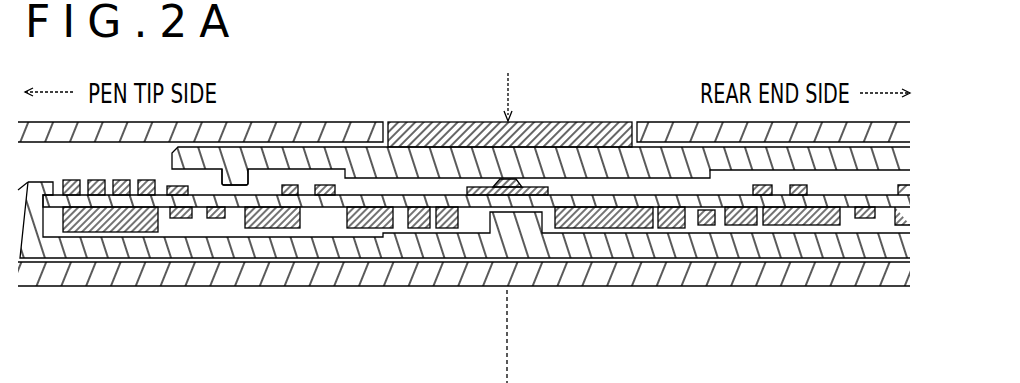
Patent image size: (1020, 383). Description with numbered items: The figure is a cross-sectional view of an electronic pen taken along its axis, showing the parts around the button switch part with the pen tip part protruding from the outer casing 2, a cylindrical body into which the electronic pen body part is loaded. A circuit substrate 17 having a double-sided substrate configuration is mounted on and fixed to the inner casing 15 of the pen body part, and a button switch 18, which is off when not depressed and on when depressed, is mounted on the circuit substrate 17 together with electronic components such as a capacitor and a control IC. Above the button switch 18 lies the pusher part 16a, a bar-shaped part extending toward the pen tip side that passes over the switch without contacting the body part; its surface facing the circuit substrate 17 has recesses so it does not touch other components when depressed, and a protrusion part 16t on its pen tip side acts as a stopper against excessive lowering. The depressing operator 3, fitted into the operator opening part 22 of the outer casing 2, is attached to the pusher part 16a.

The outer casing 2 is at (257, 122).
The depressing operator 3 is at (562, 122).
The operator opening part 22 is at (635, 147).
The inner casing 15 is at (384, 237).
The pusher part 16a is at (453, 175).
The protrusion part 16t is at (238, 185).
The circuit substrate 17 is at (318, 197).
The button switch 18 is at (522, 193).